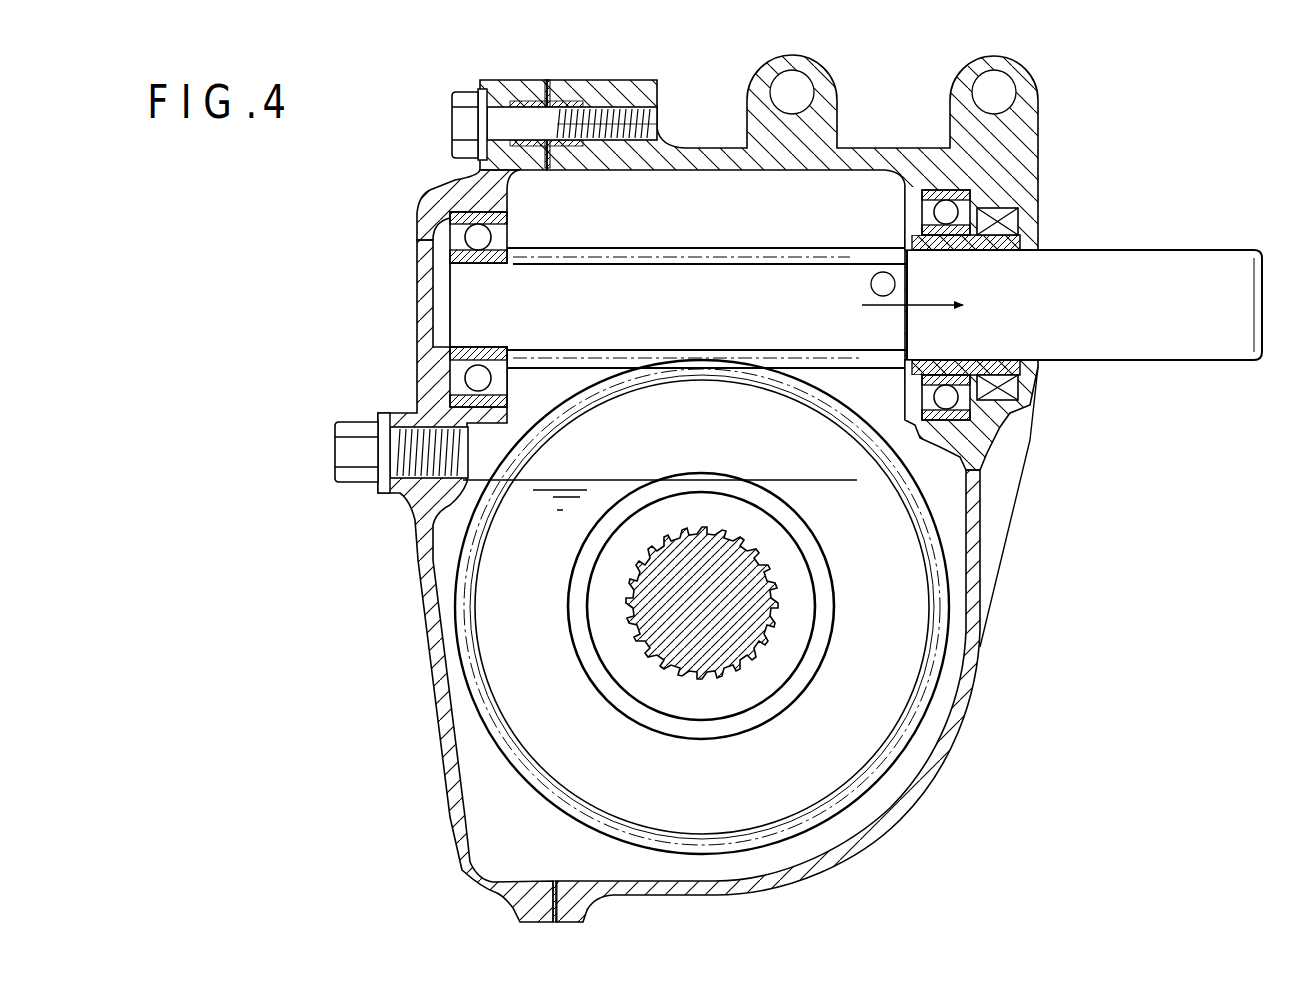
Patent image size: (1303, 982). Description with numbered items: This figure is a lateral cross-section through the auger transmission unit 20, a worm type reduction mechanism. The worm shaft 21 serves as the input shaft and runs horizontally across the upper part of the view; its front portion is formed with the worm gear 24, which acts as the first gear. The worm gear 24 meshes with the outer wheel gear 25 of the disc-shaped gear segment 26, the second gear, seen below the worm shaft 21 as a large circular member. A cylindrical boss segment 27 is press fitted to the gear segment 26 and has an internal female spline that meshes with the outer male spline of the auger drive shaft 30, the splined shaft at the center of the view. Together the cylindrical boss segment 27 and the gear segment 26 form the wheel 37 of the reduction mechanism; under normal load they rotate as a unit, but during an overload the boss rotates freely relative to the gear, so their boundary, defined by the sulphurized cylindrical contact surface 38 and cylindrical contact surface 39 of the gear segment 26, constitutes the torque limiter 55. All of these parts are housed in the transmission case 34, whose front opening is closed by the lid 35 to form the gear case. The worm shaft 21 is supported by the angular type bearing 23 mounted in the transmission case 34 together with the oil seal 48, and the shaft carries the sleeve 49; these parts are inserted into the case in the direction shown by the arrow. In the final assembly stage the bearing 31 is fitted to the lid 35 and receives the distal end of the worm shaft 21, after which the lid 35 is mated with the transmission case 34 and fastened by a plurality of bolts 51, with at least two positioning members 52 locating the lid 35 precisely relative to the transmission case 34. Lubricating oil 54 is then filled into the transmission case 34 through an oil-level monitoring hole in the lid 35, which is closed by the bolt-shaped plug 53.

The auger transmission unit 20 is at (344, 227).
The worm shaft 21 is at (1137, 362).
The bearing 23 is at (950, 180).
The worm gear 24 is at (692, 247).
The outer wheel gear 25 is at (717, 350).
The gear segment 26 is at (647, 682).
The cylindrical boss segment 27 is at (557, 737).
The auger drive shaft 30 is at (675, 598).
The bearing 31 is at (447, 188).
The transmission case 34 is at (968, 692).
The lid 35 is at (418, 588).
The wheel 37 is at (268, 690).
The cylindrical contact surface 38 is at (775, 703).
The cylindrical contact surface 39 is at (774, 679).
The oil seal 48 is at (1040, 223).
The sleeve 49 is at (905, 236).
The bolts 51 is at (450, 120).
The positioning members 52 is at (572, 82).
The bolt-shaped plug 53 is at (338, 448).
The lubricating oil 54 is at (560, 480).
The torque limiter 55 is at (1100, 712).